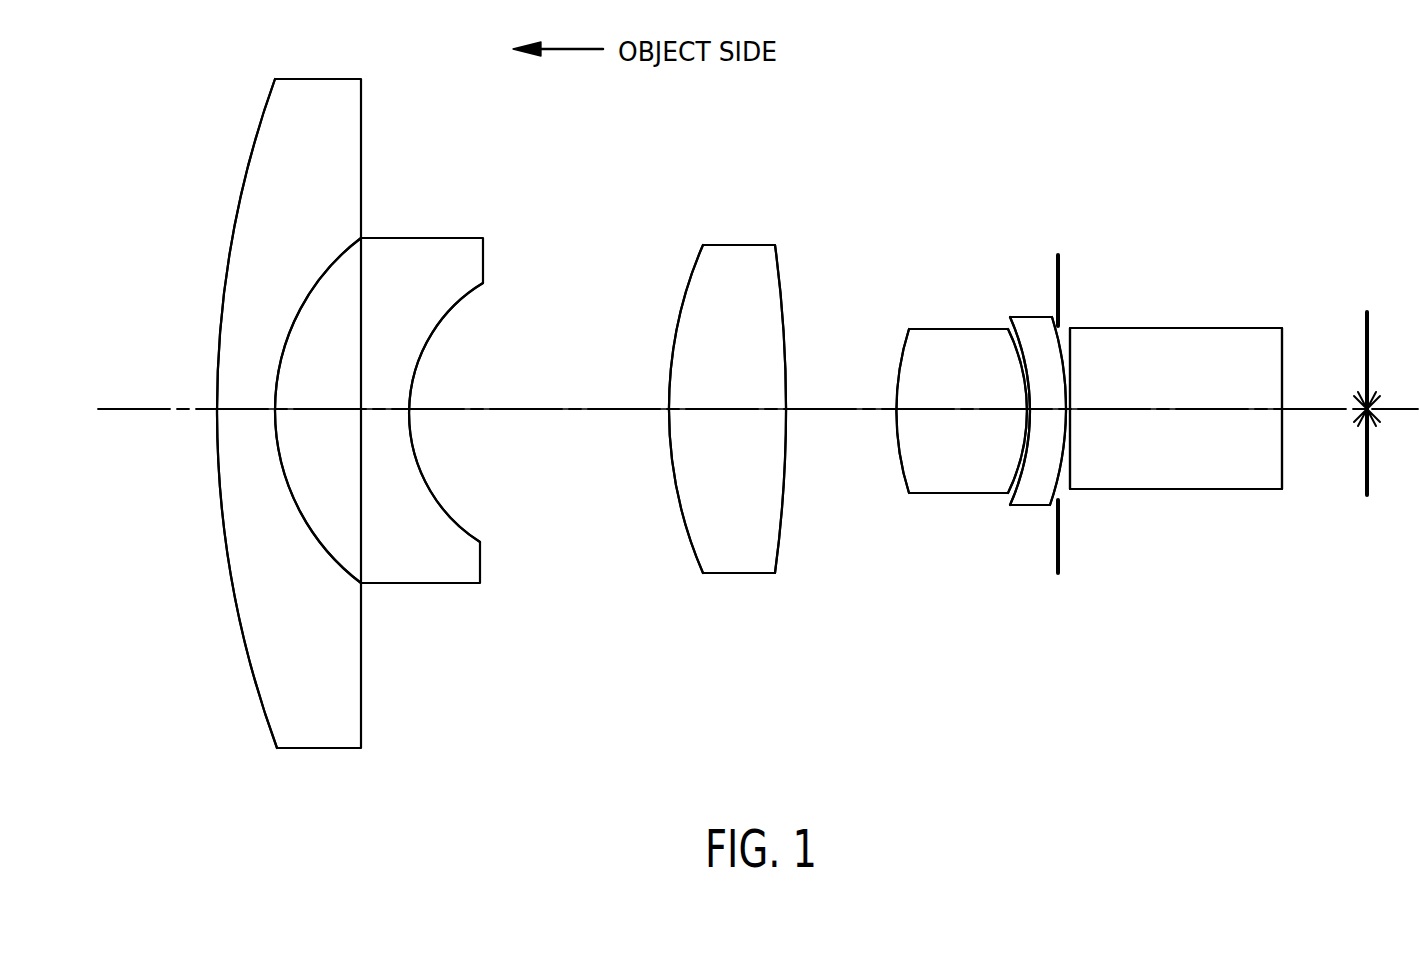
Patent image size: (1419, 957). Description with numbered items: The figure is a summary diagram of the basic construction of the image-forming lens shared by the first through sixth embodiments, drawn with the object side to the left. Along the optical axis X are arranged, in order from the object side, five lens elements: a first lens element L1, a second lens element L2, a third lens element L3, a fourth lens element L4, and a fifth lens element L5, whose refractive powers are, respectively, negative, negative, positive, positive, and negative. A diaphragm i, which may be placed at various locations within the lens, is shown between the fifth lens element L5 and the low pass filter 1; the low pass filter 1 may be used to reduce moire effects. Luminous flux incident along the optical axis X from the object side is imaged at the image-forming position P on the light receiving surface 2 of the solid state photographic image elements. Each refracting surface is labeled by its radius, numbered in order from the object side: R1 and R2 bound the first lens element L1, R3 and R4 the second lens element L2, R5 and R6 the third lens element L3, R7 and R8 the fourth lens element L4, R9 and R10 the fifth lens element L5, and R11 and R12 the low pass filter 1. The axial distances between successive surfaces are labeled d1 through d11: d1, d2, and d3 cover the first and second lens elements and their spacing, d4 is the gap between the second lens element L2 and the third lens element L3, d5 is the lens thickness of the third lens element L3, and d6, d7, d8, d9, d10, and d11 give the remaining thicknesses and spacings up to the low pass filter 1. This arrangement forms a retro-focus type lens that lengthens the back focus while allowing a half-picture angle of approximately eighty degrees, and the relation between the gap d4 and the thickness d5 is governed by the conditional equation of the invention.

The first lens element L1 is at (283, 673).
The second lens element L2 is at (412, 568).
The third lens element L3 is at (739, 536).
The fourth lens element L4 is at (937, 473).
The fifth lens element L5 is at (1025, 496).
The lens element surface radius R1 is at (243, 180).
The lens element surface radius R2 is at (328, 284).
The lens element surface radius R3 is at (356, 270).
The lens element surface radius R4 is at (458, 303).
The lens element surface radius R5 is at (683, 282).
The lens element surface radius R6 is at (780, 282).
The lens element surface radius R7 is at (907, 342).
The lens element surface radius R8 is at (1007, 365).
The lens element surface radius R9 is at (1027, 367).
The lens element surface radius R10 is at (1042, 327).
The lens element surface radius R11 is at (1073, 343).
The lens element surface radius R12 is at (1285, 333).
The distance between lens element surfaces d1 is at (255, 405).
The distance between lens element surfaces d2 is at (330, 405).
The distance between lens element surfaces d3 is at (400, 405).
The gap between second and third lens elements d4 is at (515, 403).
The lens thickness of third lens element d5 is at (735, 405).
The distance between lens element surfaces d6 is at (840, 405).
The distance between lens element surfaces d7 is at (913, 405).
The distance between lens element surfaces d8 is at (1027, 400).
The distance between lens element surfaces d9 is at (1047, 415).
The distance between lens element surfaces d10 is at (1072, 400).
The distance between lens element surfaces d11 is at (1173, 405).
The low pass filter 1 is at (1152, 475).
The light receiving surface 2 is at (1363, 332).
The diaphragm i is at (1075, 563).
The image-forming position P is at (1360, 413).
The optical axis X is at (160, 403).